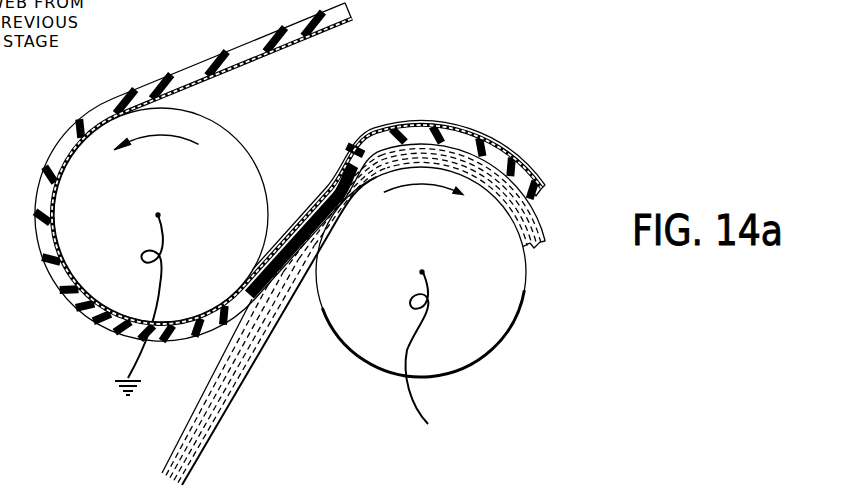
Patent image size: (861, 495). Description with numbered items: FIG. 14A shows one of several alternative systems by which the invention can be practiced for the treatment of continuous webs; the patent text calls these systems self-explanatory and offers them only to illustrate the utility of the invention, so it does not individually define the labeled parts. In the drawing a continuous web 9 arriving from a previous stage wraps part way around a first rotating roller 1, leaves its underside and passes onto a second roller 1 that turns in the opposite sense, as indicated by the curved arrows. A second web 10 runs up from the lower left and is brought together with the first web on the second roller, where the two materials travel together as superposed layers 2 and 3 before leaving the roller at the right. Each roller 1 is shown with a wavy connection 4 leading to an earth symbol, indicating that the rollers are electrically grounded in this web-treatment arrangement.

The roller 1 is at (217, 160).
The web layer 2 is at (541, 194).
The web layer 3 is at (541, 245).
The ground connection 4 is at (136, 355).
The laminated web 9 is at (500, 160).
The web 10 is at (228, 410).